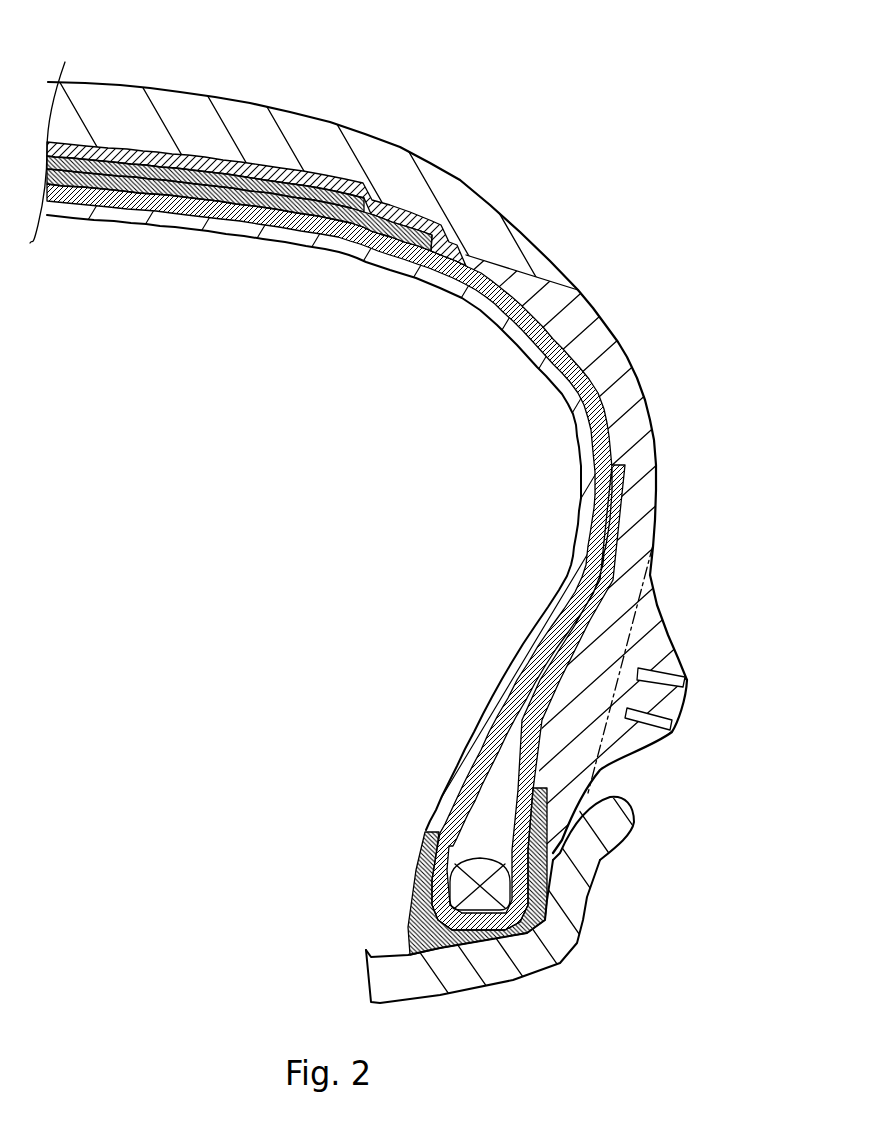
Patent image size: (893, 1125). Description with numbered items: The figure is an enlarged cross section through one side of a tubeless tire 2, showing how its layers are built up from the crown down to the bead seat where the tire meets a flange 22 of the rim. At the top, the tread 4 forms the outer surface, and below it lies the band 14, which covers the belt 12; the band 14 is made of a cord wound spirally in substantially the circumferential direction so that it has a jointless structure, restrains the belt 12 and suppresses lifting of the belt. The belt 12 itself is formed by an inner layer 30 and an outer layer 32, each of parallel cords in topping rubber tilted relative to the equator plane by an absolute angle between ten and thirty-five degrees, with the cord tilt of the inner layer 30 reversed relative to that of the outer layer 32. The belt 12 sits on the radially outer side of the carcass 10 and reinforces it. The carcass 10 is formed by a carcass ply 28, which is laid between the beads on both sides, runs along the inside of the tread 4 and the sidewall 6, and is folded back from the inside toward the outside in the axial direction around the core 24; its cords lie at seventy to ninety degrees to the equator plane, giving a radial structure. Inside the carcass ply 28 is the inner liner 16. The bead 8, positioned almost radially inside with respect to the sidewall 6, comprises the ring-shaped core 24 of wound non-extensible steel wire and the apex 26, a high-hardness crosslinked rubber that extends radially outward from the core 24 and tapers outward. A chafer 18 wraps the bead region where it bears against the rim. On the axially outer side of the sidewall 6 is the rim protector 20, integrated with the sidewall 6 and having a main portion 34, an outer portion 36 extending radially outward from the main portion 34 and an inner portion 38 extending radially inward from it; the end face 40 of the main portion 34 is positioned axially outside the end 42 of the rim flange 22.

The tire 2 is at (457, 147).
The tread 4 is at (118, 115).
The sidewall 6 is at (633, 500).
The bead 8 is at (433, 745).
The carcass 10 is at (336, 557).
The belt 12 is at (239, 257).
The band 14 is at (258, 148).
The inner liner 16 is at (278, 235).
The chafer 18 is at (418, 932).
The rim protector 20 is at (683, 699).
The flange 22 is at (540, 895).
The core 24 is at (420, 860).
The apex 26 is at (487, 808).
The carcass ply 28 is at (517, 328).
The inner layer 30 is at (87, 197).
The outer layer 32 is at (168, 180).
The main portion 34 is at (665, 708).
The outer portion 36 is at (653, 627).
The inner portion 38 is at (630, 738).
The end face 40 is at (682, 698).
The end 42 is at (633, 802).